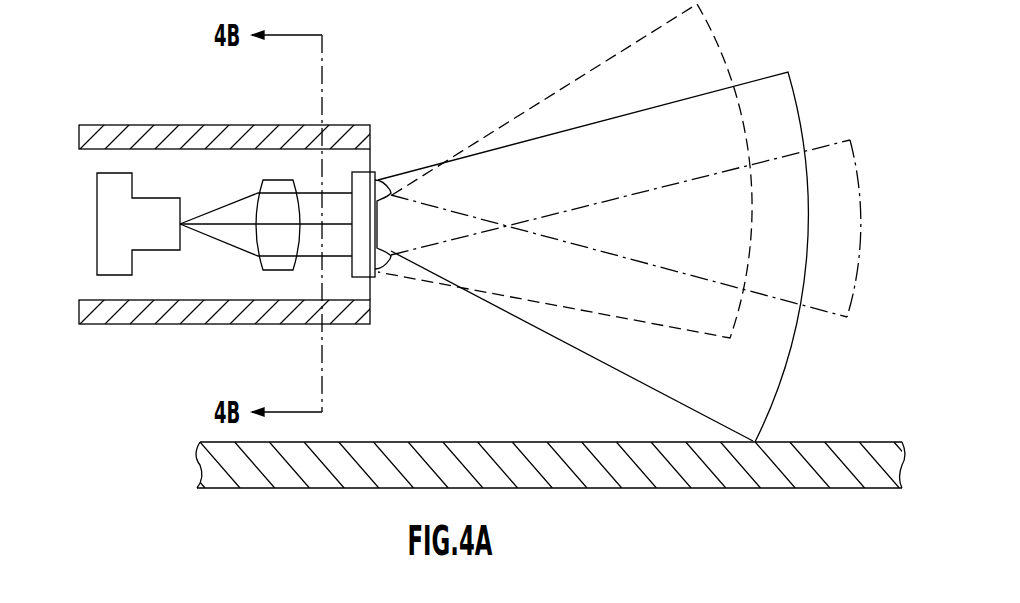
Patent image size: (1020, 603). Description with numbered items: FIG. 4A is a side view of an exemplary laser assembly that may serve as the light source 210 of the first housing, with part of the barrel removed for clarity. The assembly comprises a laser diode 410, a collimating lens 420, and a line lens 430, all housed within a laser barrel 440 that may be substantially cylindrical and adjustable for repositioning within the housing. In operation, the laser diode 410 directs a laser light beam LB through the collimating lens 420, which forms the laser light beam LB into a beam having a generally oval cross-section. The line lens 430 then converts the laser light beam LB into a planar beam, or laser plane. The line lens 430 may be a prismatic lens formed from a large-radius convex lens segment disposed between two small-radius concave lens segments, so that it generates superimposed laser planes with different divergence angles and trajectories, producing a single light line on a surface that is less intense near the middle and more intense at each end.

The light source 210 is at (117, 124).
The laser diode 410 is at (100, 232).
The collimating lens 420 is at (271, 186).
The line lens 430 is at (381, 182).
The laser barrel 440 is at (125, 326).
The laser light beam LB is at (236, 201).